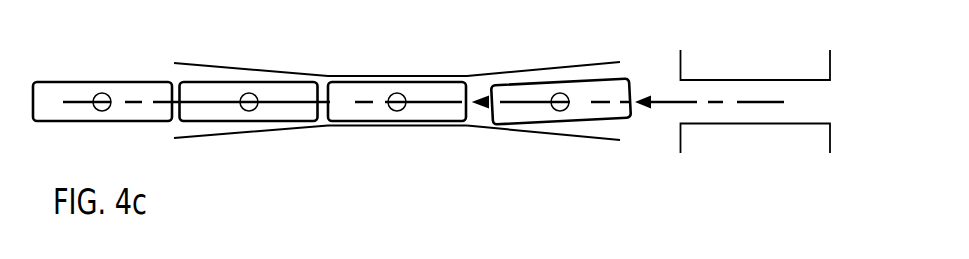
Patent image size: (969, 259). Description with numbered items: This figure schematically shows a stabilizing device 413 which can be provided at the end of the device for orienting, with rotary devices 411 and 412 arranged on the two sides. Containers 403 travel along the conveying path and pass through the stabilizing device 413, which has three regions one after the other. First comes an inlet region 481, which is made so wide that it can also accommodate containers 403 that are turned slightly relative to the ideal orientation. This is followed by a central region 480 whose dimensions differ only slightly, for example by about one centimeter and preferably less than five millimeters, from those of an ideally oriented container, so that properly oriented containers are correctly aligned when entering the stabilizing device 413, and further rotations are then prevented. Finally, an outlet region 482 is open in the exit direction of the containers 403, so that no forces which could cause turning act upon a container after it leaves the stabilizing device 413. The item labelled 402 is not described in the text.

The container 403 is at (109, 80).
The outlet region 482 is at (258, 77).
The central region 480 is at (477, 77).
The inlet region 481 is at (555, 135).
The stabilizing device 413 is at (357, 136).
The incoming light beam 402 is at (657, 107).
The rotary device 411 is at (740, 68).
The rotary device 412 is at (740, 162).